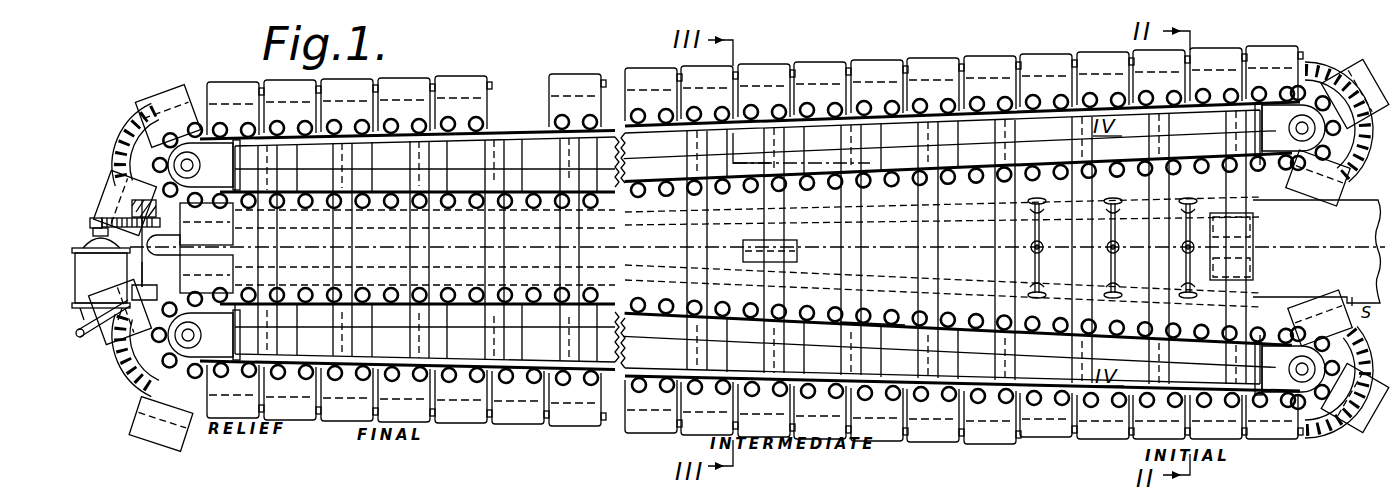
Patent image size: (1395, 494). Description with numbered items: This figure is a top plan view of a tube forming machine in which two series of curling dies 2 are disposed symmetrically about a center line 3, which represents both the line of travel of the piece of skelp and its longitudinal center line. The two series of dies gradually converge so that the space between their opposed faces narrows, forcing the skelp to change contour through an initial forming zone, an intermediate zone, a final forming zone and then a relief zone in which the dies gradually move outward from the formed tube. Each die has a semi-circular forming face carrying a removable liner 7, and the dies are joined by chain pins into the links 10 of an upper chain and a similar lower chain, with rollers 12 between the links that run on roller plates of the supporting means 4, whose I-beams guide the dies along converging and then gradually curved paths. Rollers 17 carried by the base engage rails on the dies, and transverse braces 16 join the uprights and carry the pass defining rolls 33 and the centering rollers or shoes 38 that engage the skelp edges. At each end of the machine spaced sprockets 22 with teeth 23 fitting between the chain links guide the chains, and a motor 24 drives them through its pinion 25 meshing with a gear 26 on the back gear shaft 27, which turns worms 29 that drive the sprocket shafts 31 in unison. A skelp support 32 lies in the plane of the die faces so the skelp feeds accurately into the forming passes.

The curling dies 2 is at (440, 220).
The center line 3 is at (1317, 251).
The supporting means 4 is at (873, 172).
The liner 7 is at (980, 76).
The links 10 is at (527, 384).
The rollers 12 is at (585, 384).
The transverse braces 16 is at (838, 139).
The rollers 17 is at (1318, 76).
The sprockets 22 is at (188, 150).
The sprocket teeth 23 is at (1284, 402).
The motor 24 is at (120, 310).
The driving pinion 25 is at (91, 222).
The gear 26 is at (138, 234).
The back gear shaft 27 is at (137, 270).
The worms 29 is at (140, 185).
The sprocket shafts 31 is at (188, 148).
The skelp support 32 is at (1255, 226).
The pass defining rolls 33 is at (942, 290).
The guard or flange rollers or sliding shoes 38 is at (1080, 198).